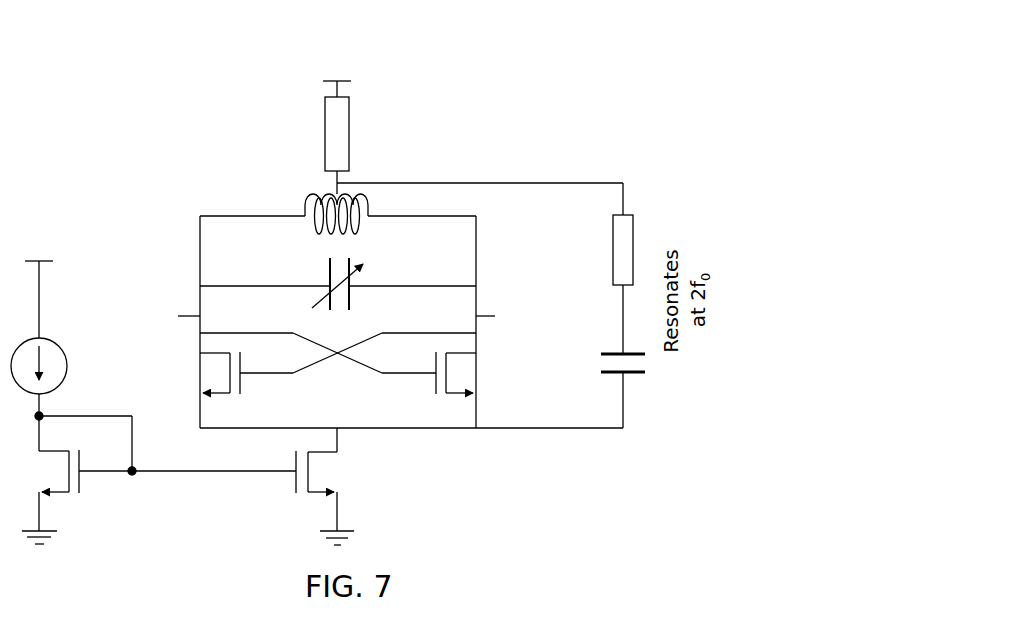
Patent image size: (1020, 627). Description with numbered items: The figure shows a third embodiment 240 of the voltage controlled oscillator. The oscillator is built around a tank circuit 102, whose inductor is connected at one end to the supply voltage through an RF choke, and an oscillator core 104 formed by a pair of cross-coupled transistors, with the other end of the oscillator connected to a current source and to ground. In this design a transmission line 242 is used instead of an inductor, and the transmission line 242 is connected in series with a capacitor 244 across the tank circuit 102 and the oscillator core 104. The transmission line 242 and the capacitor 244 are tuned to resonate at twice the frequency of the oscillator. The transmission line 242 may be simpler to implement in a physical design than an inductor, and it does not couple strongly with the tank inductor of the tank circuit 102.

The third embodiment 240 is at (592, 92).
The tank circuit 102 is at (490, 229).
The oscillator core 104 is at (488, 375).
The transmission line T2 242 is at (633, 225).
The capacitor 244 is at (633, 375).